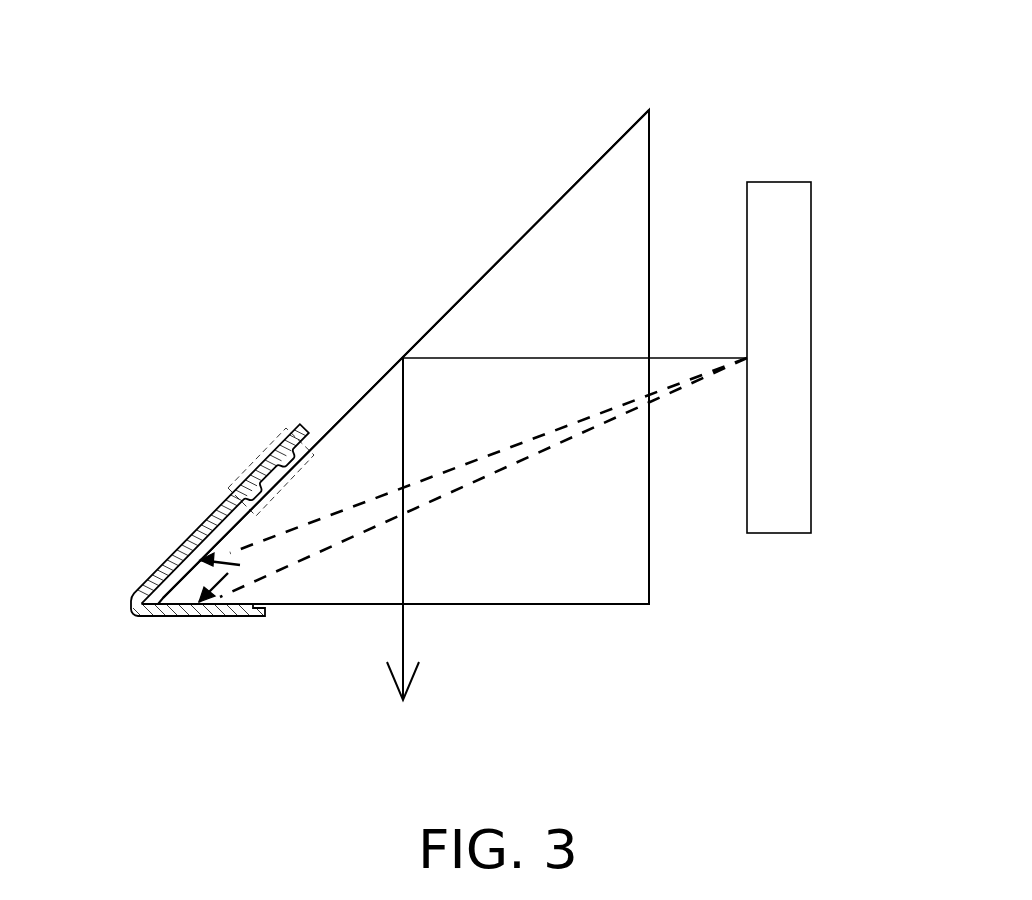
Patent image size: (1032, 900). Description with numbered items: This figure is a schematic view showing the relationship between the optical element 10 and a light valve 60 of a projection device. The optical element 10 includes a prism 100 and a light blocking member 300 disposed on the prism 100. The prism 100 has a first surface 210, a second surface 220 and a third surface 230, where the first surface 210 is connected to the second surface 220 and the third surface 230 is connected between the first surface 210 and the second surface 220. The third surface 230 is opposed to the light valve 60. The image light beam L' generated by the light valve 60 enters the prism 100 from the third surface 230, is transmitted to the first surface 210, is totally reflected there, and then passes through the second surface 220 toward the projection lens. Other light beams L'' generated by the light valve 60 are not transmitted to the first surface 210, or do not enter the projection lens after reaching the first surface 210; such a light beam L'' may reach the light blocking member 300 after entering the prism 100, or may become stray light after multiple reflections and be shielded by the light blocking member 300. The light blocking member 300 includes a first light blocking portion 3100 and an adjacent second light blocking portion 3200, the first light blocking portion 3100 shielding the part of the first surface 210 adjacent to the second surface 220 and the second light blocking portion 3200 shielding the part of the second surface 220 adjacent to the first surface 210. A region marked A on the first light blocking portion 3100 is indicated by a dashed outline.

The optical element 10 is at (466, 191).
The prism 100 is at (627, 207).
The first surface 210 is at (556, 167).
The second surface 220 is at (622, 627).
The third surface 230 is at (670, 567).
The light valve 60 is at (787, 327).
The light blocking member 300 is at (179, 586).
The first light blocking portion 3100 is at (176, 536).
The second light blocking portion 3200 is at (208, 632).
The enlarged detail region A is at (267, 448).
The image light beam L' is at (456, 529).
The light beam L'' is at (473, 529).